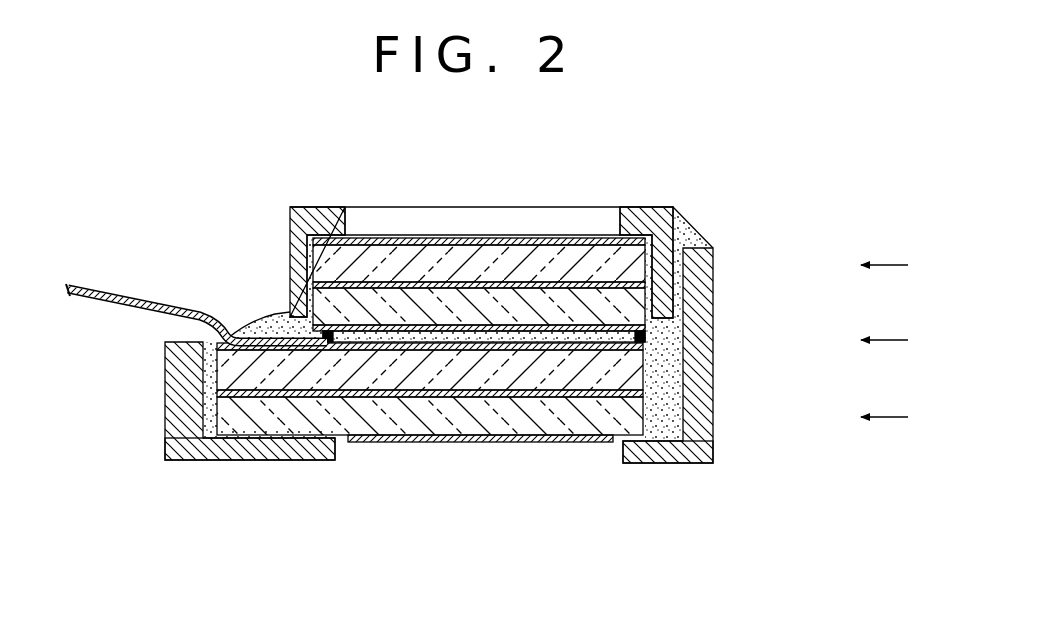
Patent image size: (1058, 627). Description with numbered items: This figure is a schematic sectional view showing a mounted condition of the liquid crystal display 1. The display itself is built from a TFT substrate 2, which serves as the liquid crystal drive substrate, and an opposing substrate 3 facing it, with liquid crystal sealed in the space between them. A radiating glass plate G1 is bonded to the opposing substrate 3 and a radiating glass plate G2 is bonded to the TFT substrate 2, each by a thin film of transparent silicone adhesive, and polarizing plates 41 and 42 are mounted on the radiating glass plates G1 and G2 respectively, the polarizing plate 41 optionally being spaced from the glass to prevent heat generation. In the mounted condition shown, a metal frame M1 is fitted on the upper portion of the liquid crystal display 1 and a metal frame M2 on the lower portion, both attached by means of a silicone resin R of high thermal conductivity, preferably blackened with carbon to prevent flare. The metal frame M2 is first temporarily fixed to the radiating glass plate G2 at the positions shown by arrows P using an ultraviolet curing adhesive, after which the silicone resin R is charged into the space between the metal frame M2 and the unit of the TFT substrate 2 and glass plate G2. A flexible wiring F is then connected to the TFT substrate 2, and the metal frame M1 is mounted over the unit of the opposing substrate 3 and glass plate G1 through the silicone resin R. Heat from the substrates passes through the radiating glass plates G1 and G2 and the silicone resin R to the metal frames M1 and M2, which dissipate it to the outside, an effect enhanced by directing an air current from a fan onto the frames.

The liquid crystal display 1 is at (419, 229).
The TFT substrate 2 is at (508, 378).
The opposing substrate 3 is at (478, 300).
The polarizing plate 41 is at (528, 242).
The polarizing plate 42 is at (468, 443).
The radiating glass plate G1 is at (583, 265).
The radiating glass plate G2 is at (402, 430).
The metal frame M1 is at (655, 225).
The metal frame M2 is at (178, 391).
The silicone resin R is at (262, 313).
The flexible wiring F is at (126, 290).
The positions shown by arrows P is at (270, 443).